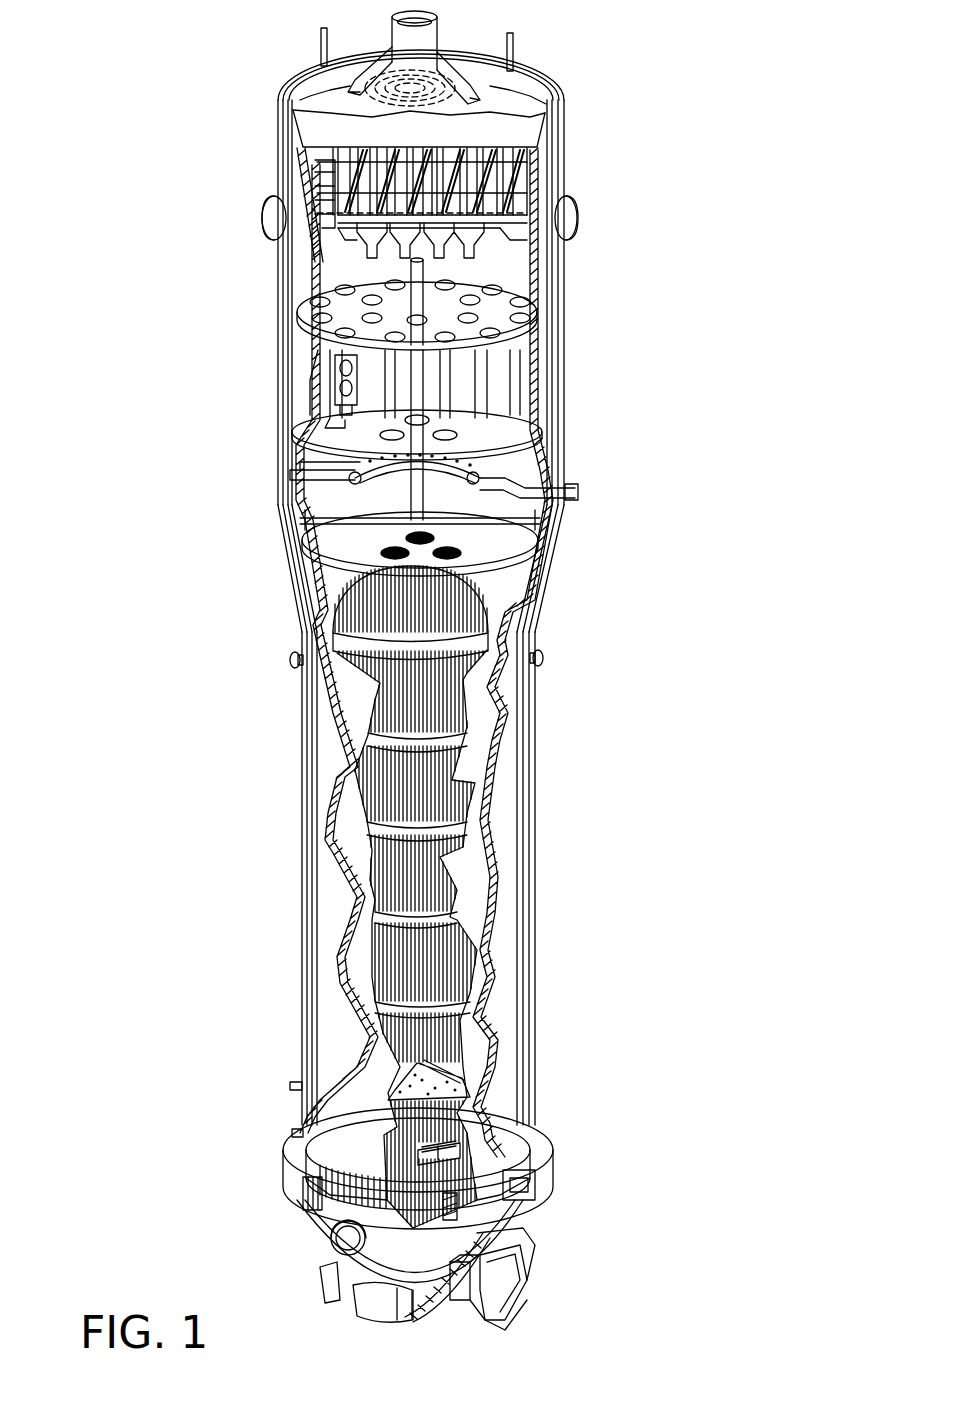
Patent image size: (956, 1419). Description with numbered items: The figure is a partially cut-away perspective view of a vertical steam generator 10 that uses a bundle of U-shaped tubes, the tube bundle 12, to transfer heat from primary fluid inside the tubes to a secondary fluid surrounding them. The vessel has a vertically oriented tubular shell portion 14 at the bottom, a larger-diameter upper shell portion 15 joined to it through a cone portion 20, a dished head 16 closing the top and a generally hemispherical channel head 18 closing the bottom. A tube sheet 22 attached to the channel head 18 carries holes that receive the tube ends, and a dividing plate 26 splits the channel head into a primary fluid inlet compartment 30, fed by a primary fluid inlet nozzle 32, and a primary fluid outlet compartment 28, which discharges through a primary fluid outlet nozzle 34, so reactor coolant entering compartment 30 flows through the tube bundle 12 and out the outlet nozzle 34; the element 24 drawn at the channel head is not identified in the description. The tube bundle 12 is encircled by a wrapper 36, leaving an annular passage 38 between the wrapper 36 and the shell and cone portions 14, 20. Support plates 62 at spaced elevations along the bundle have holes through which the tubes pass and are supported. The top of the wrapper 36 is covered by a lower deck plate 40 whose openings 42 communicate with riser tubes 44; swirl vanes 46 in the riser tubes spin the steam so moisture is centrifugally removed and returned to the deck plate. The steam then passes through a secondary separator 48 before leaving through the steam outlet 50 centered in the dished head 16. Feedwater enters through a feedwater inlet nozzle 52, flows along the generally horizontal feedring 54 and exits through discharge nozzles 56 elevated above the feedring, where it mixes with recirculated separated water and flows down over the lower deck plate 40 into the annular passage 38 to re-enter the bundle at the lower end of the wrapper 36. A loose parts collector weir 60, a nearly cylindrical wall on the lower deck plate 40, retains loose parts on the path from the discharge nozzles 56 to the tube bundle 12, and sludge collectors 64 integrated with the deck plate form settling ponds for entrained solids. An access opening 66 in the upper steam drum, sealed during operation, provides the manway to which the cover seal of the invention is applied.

The steam generator 10 is at (556, 385).
The tube bundle 12 is at (455, 972).
The tubular shell portion 14 is at (520, 893).
The upper shell portion 15 is at (556, 344).
The dished head 16 is at (540, 82).
The channel head 18 is at (545, 1213).
The cone portion 20 is at (522, 625).
The tube sheet 22 is at (325, 1236).
The support block 24 is at (477, 1233).
The dividing plate 26 is at (365, 1298).
The primary fluid outlet compartment 28 is at (325, 1258).
The primary fluid inlet compartment 30 is at (520, 1265).
The primary fluid inlet nozzle 32 is at (520, 1298).
The primary fluid outlet nozzle 34 is at (400, 1316).
The wrapper 36 is at (350, 710).
The annular passage 38 is at (470, 788).
The lower deck plate 40 is at (340, 590).
The openings 42 is at (470, 575).
The riser tubes 44 is at (360, 510).
The swirl vanes 46 is at (340, 384).
The secondary separator 48 is at (512, 191).
The steam outlet 50 is at (437, 20).
The feedwater inlet nozzle 52 is at (560, 485).
The feedring 54 is at (462, 520).
The discharge nozzles 56 is at (352, 472).
The loose parts collector weir 60 is at (540, 540).
The support plates 62 is at (400, 895).
The sludge collectors 64 is at (355, 540).
The access opening 66 is at (262, 214).